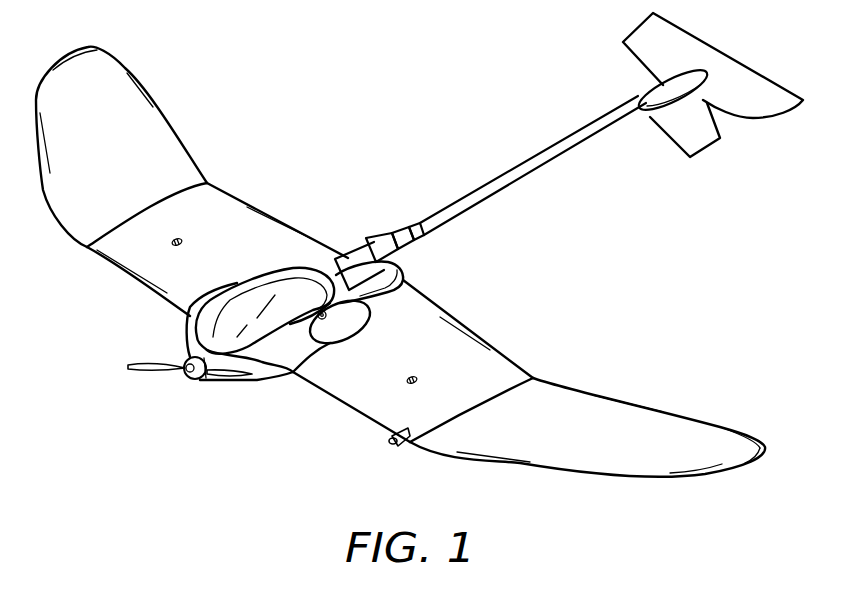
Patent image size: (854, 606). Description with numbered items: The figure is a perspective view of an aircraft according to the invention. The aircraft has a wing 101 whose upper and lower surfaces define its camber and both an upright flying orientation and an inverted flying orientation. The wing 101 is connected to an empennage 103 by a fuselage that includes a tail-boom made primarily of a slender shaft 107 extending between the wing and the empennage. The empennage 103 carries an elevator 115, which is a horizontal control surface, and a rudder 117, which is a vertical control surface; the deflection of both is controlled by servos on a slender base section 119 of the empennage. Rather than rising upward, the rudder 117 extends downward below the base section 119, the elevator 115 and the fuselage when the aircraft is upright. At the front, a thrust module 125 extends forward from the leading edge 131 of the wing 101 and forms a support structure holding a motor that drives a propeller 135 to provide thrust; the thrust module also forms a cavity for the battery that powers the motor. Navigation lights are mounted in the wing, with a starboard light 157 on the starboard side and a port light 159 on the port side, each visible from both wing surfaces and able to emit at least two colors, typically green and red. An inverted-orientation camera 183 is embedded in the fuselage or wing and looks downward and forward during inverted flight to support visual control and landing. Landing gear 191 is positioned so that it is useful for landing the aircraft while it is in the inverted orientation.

The wing 101 is at (240, 207).
The leading edge 131 is at (87, 248).
The starboard light 157 is at (183, 238).
The port light 159 is at (407, 382).
The thrust module 125 is at (262, 363).
The propeller 135 is at (140, 372).
The landing gear 191 is at (312, 285).
The inverted-orientation camera 183 is at (395, 271).
The slender shaft 107 is at (506, 176).
The empennage 103 is at (706, 102).
The elevator 115 is at (770, 83).
The rudder 117 is at (690, 140).
The base section 119 is at (667, 92).